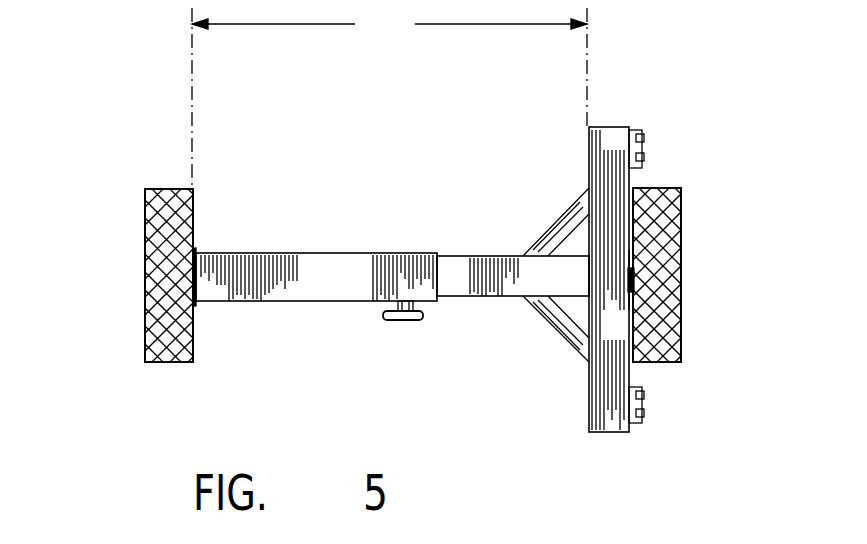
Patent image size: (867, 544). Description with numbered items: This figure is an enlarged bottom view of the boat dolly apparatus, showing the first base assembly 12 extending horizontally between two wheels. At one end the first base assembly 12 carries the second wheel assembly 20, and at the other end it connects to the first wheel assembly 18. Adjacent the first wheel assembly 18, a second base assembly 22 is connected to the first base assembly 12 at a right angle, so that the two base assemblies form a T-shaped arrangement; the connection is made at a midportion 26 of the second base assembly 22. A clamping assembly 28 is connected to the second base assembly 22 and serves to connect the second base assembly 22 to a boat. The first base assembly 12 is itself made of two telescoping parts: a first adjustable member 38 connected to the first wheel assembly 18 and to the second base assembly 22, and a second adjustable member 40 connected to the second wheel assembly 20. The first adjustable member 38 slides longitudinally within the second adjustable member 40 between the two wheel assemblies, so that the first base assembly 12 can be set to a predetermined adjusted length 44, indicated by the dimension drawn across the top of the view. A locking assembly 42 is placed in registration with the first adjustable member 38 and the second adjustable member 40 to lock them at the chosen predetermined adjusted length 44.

The first base assembly 12 is at (522, 269).
The first wheel assembly 18 is at (681, 190).
The second wheel assembly 20 is at (145, 189).
The second base assembly 22 is at (607, 192).
The midportion 26 is at (607, 273).
The clamping assembly 28 is at (648, 130).
The first adjustable member 38 is at (463, 282).
The second adjustable member 40 is at (300, 272).
The locking assembly 42 is at (398, 327).
The predetermined adjusted length 44 is at (389, 97).